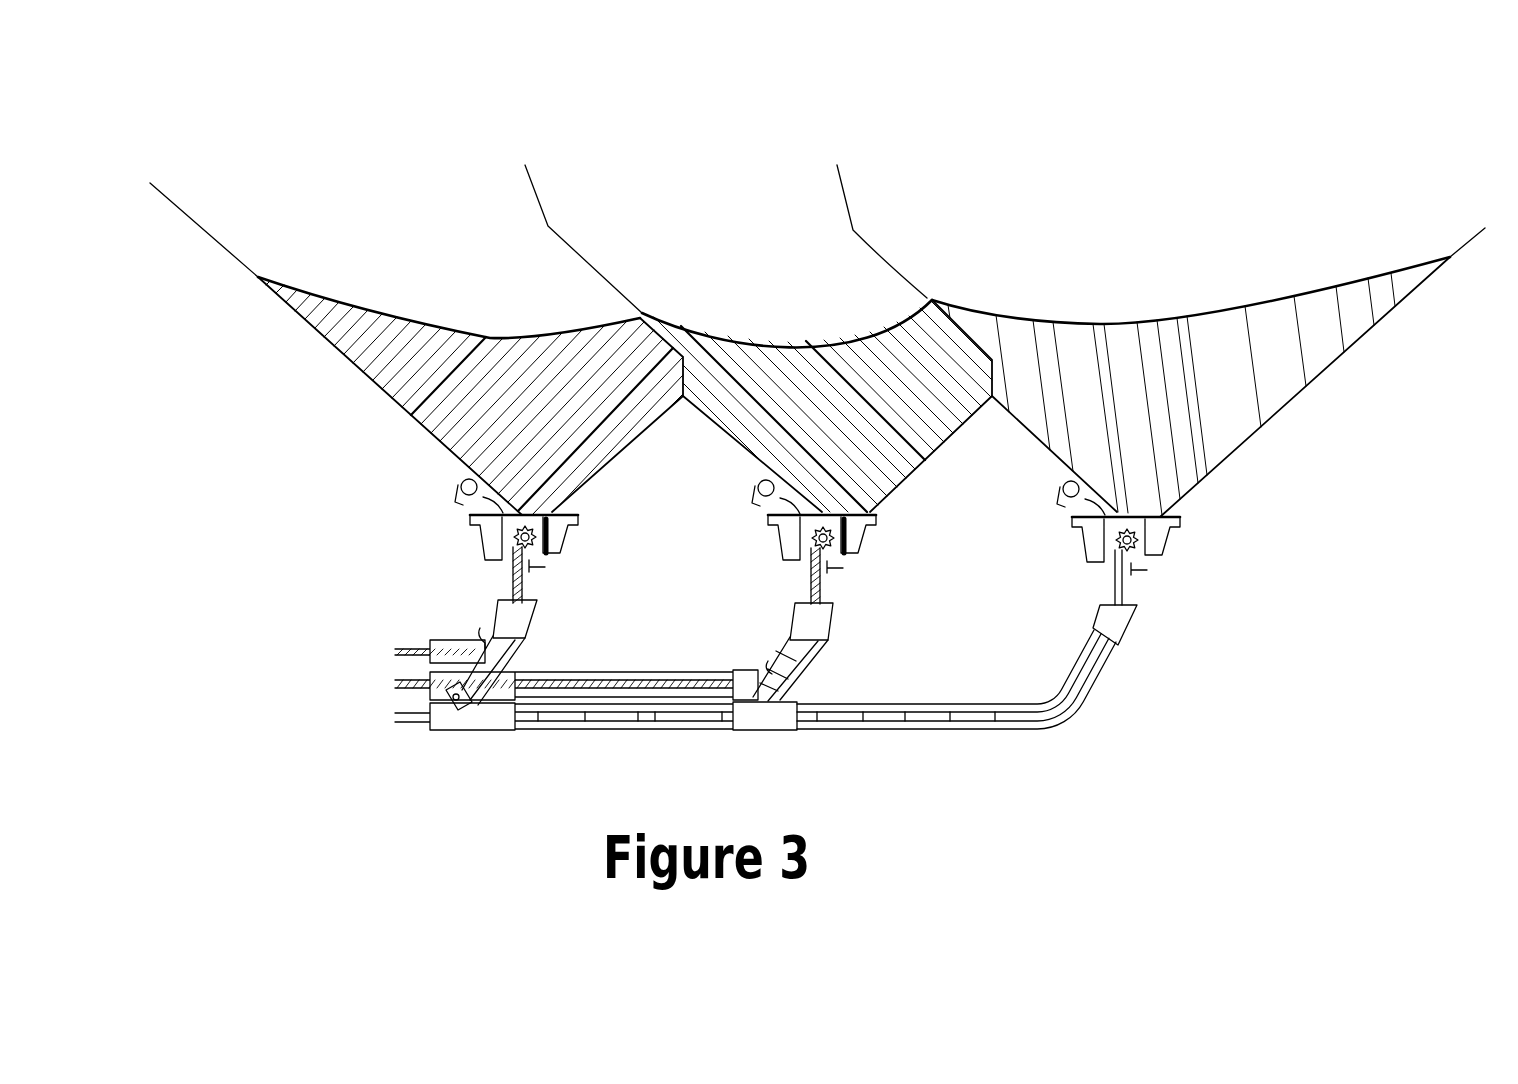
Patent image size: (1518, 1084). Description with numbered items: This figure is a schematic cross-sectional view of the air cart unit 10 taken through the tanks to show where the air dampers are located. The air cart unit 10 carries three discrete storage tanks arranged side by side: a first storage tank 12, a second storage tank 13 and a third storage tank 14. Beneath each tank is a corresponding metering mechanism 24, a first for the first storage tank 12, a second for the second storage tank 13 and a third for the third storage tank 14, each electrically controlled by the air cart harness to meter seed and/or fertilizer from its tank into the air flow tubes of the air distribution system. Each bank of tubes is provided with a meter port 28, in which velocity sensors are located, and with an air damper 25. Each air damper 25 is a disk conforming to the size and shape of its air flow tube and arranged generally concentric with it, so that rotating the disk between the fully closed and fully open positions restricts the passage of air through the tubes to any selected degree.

The air cart unit 10 is at (1277, 185).
The first storage tank 12 is at (378, 253).
The second storage tank 13 is at (692, 242).
The third storage tank 14 is at (998, 228).
The metering mechanism 24 is at (530, 560).
The air damper 25 is at (457, 490).
The meter port 28 is at (483, 543).